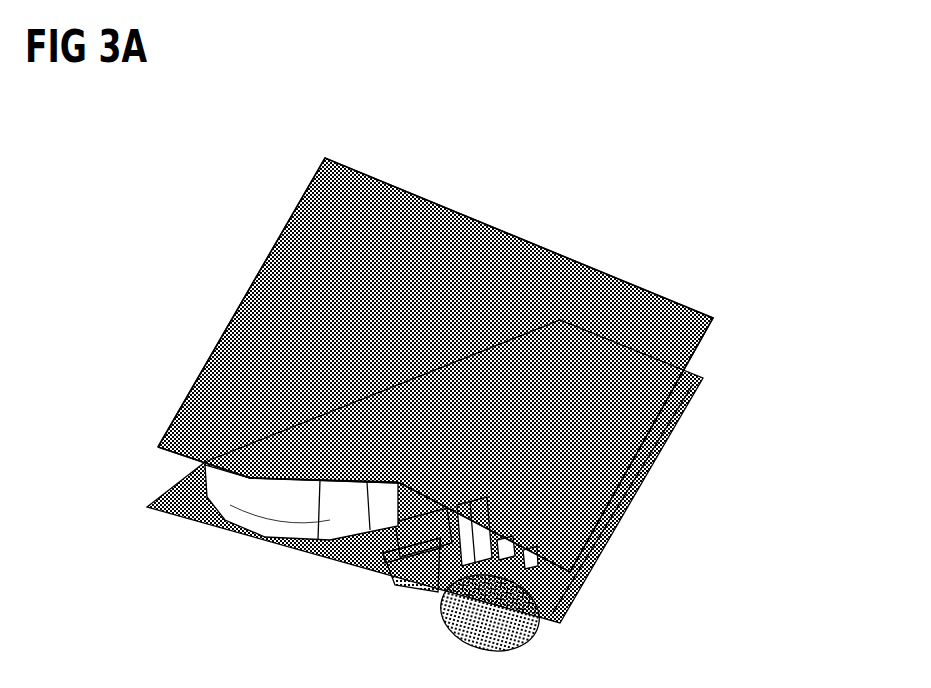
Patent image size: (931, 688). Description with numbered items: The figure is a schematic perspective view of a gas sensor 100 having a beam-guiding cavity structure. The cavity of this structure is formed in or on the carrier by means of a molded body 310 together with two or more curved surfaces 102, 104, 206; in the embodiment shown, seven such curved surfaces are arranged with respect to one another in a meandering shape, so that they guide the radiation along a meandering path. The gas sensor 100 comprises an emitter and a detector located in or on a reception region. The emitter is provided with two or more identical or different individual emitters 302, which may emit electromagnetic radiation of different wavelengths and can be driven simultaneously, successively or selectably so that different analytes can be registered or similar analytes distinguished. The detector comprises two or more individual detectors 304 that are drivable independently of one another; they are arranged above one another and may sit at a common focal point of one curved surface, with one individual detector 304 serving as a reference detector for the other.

The gas sensor 100 is at (722, 182).
The curved surface 102 is at (514, 365).
The curved surface 104 is at (514, 365).
The curved surface 206 is at (587, 462).
The individual emitter 302 is at (526, 602).
The individual detector 304 is at (411, 527).
The molded body 310 is at (713, 318).